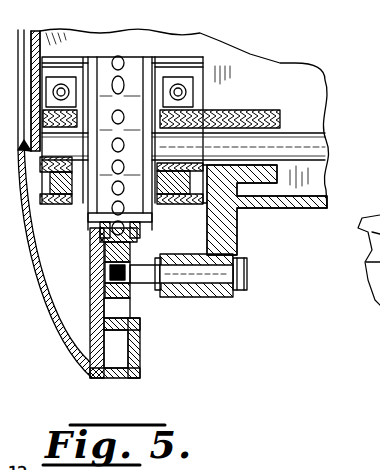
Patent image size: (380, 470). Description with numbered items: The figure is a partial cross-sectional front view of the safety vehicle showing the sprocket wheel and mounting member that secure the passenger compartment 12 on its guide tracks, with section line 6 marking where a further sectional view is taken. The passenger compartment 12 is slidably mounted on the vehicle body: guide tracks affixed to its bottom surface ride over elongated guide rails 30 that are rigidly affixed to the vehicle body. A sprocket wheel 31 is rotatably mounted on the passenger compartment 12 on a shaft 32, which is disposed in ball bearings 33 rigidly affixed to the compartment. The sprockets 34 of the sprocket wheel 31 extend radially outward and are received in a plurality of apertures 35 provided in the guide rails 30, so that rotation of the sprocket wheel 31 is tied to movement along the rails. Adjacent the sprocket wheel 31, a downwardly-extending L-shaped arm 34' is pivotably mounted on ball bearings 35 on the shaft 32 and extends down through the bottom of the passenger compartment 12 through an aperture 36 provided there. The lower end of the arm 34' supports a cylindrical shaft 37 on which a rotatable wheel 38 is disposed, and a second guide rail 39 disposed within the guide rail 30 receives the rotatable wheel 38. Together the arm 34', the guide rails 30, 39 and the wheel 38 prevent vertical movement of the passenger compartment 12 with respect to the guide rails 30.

The passenger compartment 12 is at (41, 31).
The guide rails 30 is at (93, 261).
The sprocket wheels 31 is at (133, 97).
The shaft 32 is at (313, 148).
The ball bearings 33 is at (46, 83).
The sprockets 34 is at (119, 144).
The L-shaped arms 34' is at (267, 210).
The apertures 35 is at (280, 120).
The apertures 36 is at (202, 212).
The cylindrical shafts 37 is at (202, 278).
The rotatable wheels 38 is at (128, 295).
The second pair of guide rails 39 is at (92, 306).
The section line 6- 6 is at (308, 33).